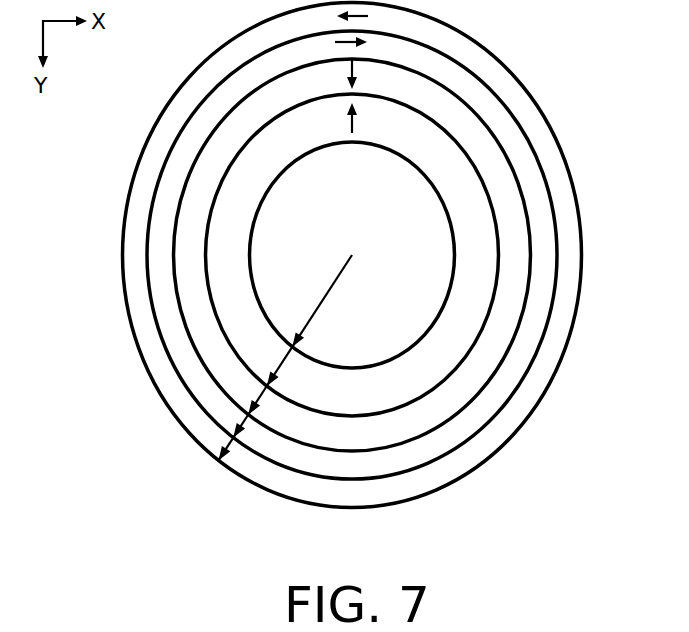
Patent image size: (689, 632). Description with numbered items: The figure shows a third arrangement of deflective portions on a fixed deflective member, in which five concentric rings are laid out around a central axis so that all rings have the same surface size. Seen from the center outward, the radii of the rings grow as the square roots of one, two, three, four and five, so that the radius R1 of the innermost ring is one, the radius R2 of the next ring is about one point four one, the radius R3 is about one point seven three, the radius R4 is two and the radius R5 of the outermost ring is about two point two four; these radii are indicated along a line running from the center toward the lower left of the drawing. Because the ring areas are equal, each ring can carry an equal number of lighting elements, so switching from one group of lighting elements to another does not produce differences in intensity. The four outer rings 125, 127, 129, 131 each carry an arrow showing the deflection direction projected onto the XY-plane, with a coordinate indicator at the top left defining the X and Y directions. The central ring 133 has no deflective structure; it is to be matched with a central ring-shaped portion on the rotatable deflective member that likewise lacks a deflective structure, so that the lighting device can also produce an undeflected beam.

The outer ring 125 is at (535, 122).
The outer ring 127 is at (532, 183).
The outer ring 129 is at (515, 243).
The outer ring 131 is at (473, 275).
The central ring 133 is at (398, 317).
The radius of first ring R1 is at (323, 293).
The radius of second ring R2 is at (278, 358).
The radius of third ring R3 is at (260, 395).
The radius of fourth ring R4 is at (245, 420).
The radius of fifth ring R5 is at (228, 448).